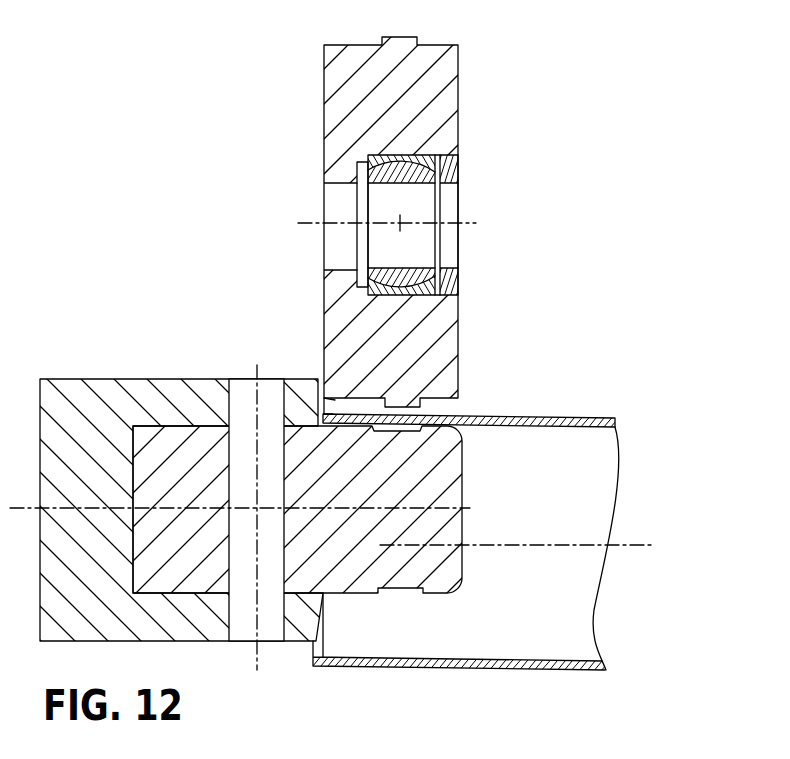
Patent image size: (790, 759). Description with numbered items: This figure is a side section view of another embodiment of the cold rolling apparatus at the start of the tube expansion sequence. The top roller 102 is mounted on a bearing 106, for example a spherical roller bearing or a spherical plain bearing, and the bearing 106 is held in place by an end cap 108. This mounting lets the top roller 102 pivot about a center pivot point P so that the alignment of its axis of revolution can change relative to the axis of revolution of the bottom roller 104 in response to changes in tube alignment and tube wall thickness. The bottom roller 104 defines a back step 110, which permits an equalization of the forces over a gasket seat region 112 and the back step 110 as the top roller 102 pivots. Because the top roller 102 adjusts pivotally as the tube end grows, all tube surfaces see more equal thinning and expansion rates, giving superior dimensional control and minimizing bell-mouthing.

The top roller 102 is at (458, 63).
The bottom roller 104 is at (461, 570).
The bearing 106 is at (412, 268).
The end cap 108 is at (460, 165).
The back step 110 is at (447, 413).
The gasket seat region 112 is at (326, 398).
The center pivot point P is at (400, 223).